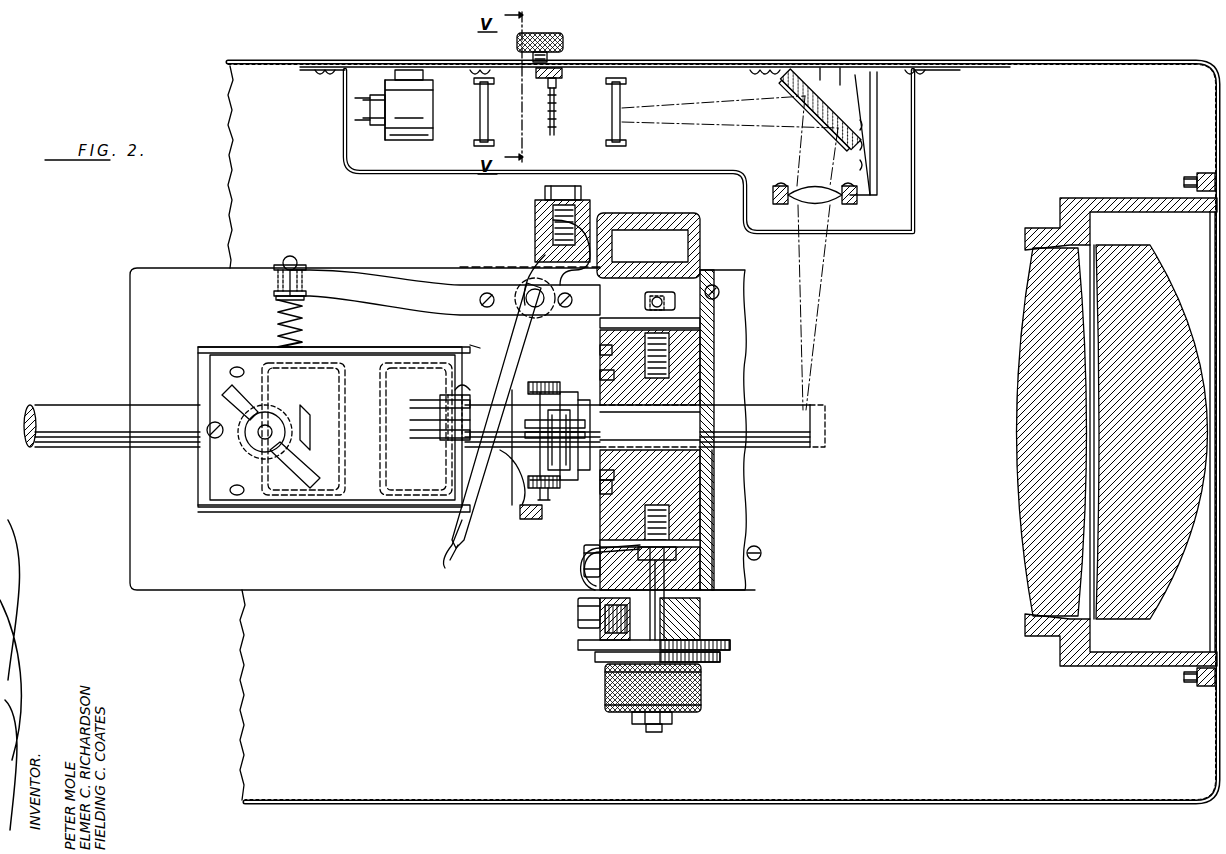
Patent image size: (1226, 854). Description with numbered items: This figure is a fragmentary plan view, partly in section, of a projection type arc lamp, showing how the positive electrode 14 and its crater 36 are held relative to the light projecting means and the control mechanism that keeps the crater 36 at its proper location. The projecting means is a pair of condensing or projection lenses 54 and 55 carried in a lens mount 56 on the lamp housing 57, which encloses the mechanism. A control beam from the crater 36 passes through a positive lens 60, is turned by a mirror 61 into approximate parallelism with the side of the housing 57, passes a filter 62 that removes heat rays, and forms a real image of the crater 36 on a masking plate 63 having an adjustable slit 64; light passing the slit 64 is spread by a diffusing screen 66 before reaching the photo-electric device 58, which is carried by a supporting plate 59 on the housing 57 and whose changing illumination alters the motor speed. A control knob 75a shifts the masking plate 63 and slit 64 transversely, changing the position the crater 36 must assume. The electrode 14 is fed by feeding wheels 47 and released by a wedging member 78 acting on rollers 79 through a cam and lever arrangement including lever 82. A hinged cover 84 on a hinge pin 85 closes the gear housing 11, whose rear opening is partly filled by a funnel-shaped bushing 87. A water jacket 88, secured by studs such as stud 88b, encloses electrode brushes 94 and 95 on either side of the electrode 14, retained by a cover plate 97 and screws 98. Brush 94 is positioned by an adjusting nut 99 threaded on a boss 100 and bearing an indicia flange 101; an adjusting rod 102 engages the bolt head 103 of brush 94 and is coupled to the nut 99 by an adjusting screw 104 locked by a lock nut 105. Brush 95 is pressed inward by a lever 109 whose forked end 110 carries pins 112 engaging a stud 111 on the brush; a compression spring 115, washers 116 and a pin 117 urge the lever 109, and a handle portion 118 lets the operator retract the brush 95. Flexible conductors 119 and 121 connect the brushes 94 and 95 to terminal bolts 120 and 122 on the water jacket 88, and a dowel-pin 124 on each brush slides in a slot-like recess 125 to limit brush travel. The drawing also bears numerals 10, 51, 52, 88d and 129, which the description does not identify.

The frame 10 is at (400, 566).
The gear housing 11 is at (470, 338).
The positive electrode 14 is at (750, 420).
The crater 36 is at (814, 435).
The electrode feeding wheel 47 is at (545, 395).
The slide block 51 is at (552, 455).
The pad 52 is at (522, 520).
The condensing or projection lens 54 is at (1040, 510).
The condensing or projection lens 55 is at (1152, 575).
The lens mount 56 is at (1118, 662).
The lamp housing 57 is at (1015, 62).
The photo-electric device 58 is at (410, 122).
The supporting plate 59 is at (683, 70).
The positive lens 60 is at (822, 200).
The mirror 61 is at (797, 102).
The filter 62 is at (618, 124).
The masking plate 63 is at (549, 92).
The slit 64 is at (554, 110).
The diffusing screen 66 is at (482, 118).
The control knob 75a is at (560, 42).
The wedging member 78 is at (590, 420).
The roller 79 is at (540, 385).
The lever 82 is at (300, 448).
The hinged cover 84 is at (408, 480).
The hinge pin 85 is at (455, 397).
The funnel-shaped bushing 87 is at (197, 378).
The water jacket 88 is at (700, 200).
The stud 88b is at (525, 287).
The nut 88d is at (580, 558).
The electrode brush 94 is at (690, 510).
The electrode brush 95 is at (712, 375).
The cover plate 97 is at (718, 520).
The screw 98 is at (716, 285).
The adjusting nut 99 is at (716, 681).
The boss 100 is at (728, 643).
The flange portion 101 is at (716, 657).
The adjusting rod 102 is at (760, 553).
The bolt head 103 is at (695, 548).
The adjusting screw 104 is at (664, 730).
The lock nut 105 is at (638, 722).
The lever 109 is at (610, 286).
The forked end 110 is at (672, 303).
The stud 111 is at (672, 342).
The pin 112 is at (666, 305).
The compression spring 115 is at (280, 325).
The washer 116 is at (278, 297).
The pin 117 is at (292, 258).
The handle portion 118 is at (480, 490).
The flexible electrical conductor 119 is at (623, 548).
The terminal bolt 120 is at (577, 612).
The flexible electrical conductor 121 is at (610, 328).
The terminal bolt 122 is at (545, 198).
The dowel-pin 124 is at (604, 357).
The slot-like recess 125 is at (604, 375).
The wall 129 is at (740, 496).